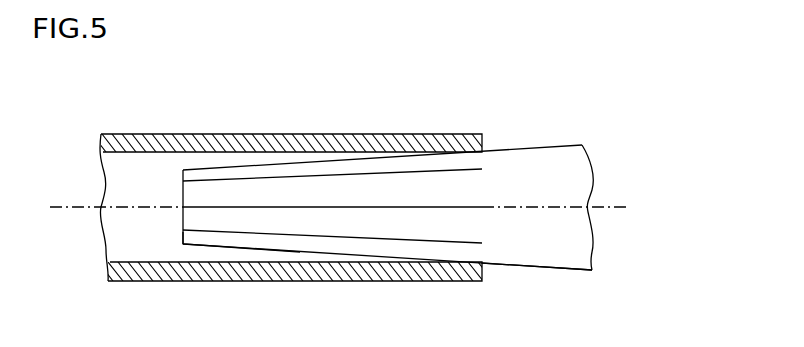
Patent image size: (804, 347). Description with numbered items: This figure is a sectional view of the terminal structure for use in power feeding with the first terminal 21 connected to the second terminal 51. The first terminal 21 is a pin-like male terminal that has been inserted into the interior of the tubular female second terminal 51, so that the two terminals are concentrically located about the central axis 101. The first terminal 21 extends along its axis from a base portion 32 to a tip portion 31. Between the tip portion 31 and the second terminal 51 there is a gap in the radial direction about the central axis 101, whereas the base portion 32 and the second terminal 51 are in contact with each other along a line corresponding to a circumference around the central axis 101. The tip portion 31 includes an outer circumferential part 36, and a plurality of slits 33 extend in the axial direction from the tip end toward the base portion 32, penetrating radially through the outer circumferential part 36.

The first terminal 21 is at (388, 201).
The tip portion 31 is at (205, 237).
The base portion 32 is at (540, 257).
The slits 33 is at (283, 237).
The outer circumferential part 36 is at (310, 162).
The second terminal 51 is at (140, 133).
The central axis 101 is at (617, 210).